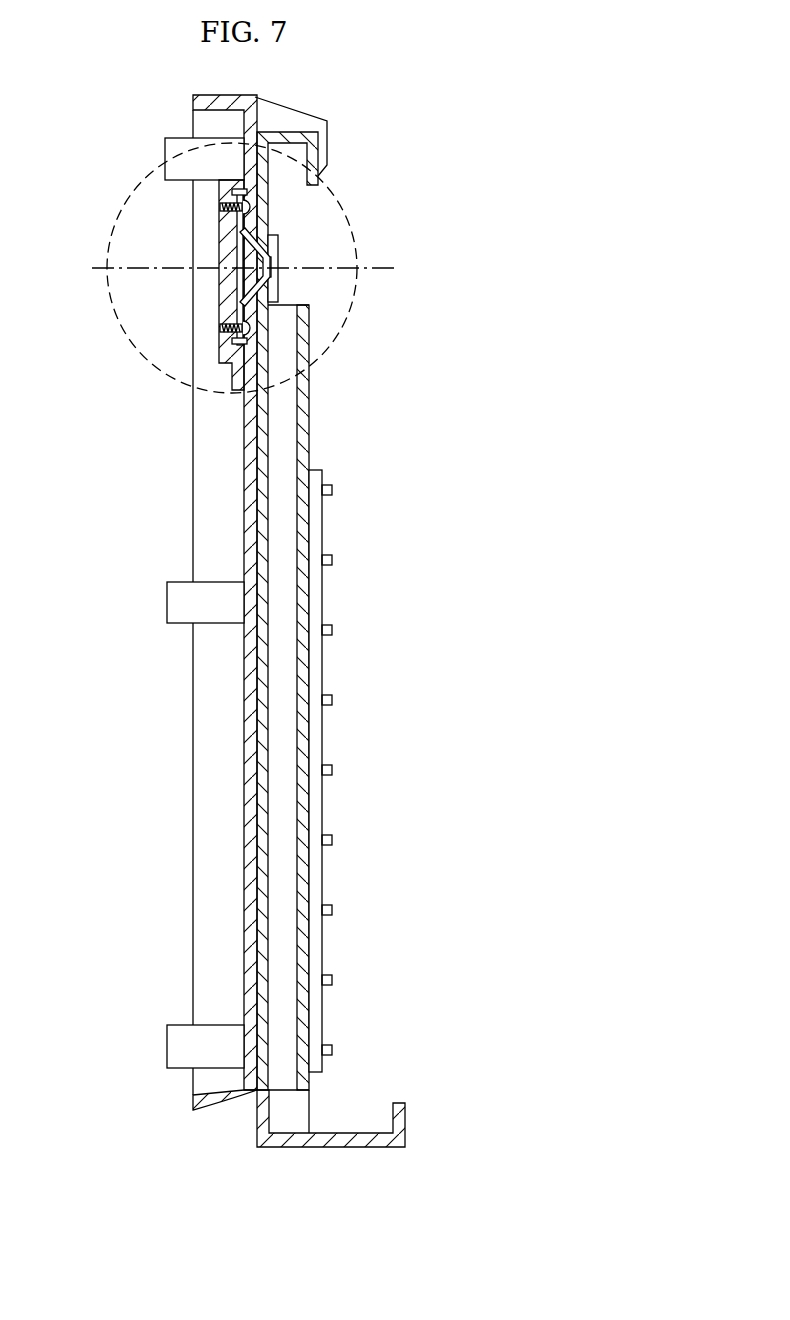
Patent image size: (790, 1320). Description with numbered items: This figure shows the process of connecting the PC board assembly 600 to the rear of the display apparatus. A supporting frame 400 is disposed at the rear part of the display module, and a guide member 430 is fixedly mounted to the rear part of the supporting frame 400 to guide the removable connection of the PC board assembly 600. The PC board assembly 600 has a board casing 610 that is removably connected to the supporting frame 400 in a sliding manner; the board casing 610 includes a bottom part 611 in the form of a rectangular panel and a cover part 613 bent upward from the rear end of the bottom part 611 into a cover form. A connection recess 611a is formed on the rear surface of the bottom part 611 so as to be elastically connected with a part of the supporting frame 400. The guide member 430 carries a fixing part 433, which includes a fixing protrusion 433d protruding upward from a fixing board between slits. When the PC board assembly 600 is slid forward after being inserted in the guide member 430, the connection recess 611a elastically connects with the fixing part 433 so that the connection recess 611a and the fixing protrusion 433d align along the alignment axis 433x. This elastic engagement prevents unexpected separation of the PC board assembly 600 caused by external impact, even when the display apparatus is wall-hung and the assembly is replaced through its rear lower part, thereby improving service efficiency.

The supporting frame 400 is at (208, 700).
The guide member 430 is at (219, 356).
The fixing part 433 is at (146, 267).
The fixing protrusion 433d is at (237, 290).
The alignment axis 433x is at (270, 268).
The PC board assembly 600 is at (321, 592).
The board casing 610 is at (307, 447).
The bottom part 611 is at (341, 611).
The connection recess 611a is at (270, 237).
The cover part 613 is at (352, 1147).